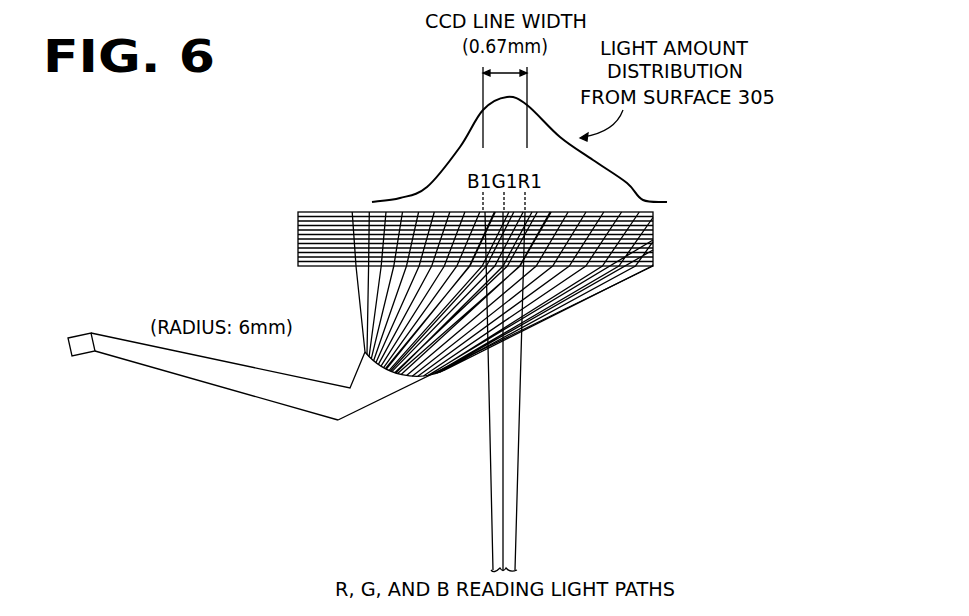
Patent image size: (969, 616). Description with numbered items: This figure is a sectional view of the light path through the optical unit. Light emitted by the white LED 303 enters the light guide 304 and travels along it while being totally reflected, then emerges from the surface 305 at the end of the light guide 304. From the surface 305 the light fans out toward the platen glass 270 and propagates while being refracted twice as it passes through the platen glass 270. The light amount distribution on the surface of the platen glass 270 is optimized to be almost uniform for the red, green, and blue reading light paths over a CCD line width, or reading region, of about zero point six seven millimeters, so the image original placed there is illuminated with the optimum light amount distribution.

The platen glass 270 is at (298, 240).
The white LED 303 is at (82, 337).
The light guide 304 is at (220, 380).
The surface 305 is at (365, 351).